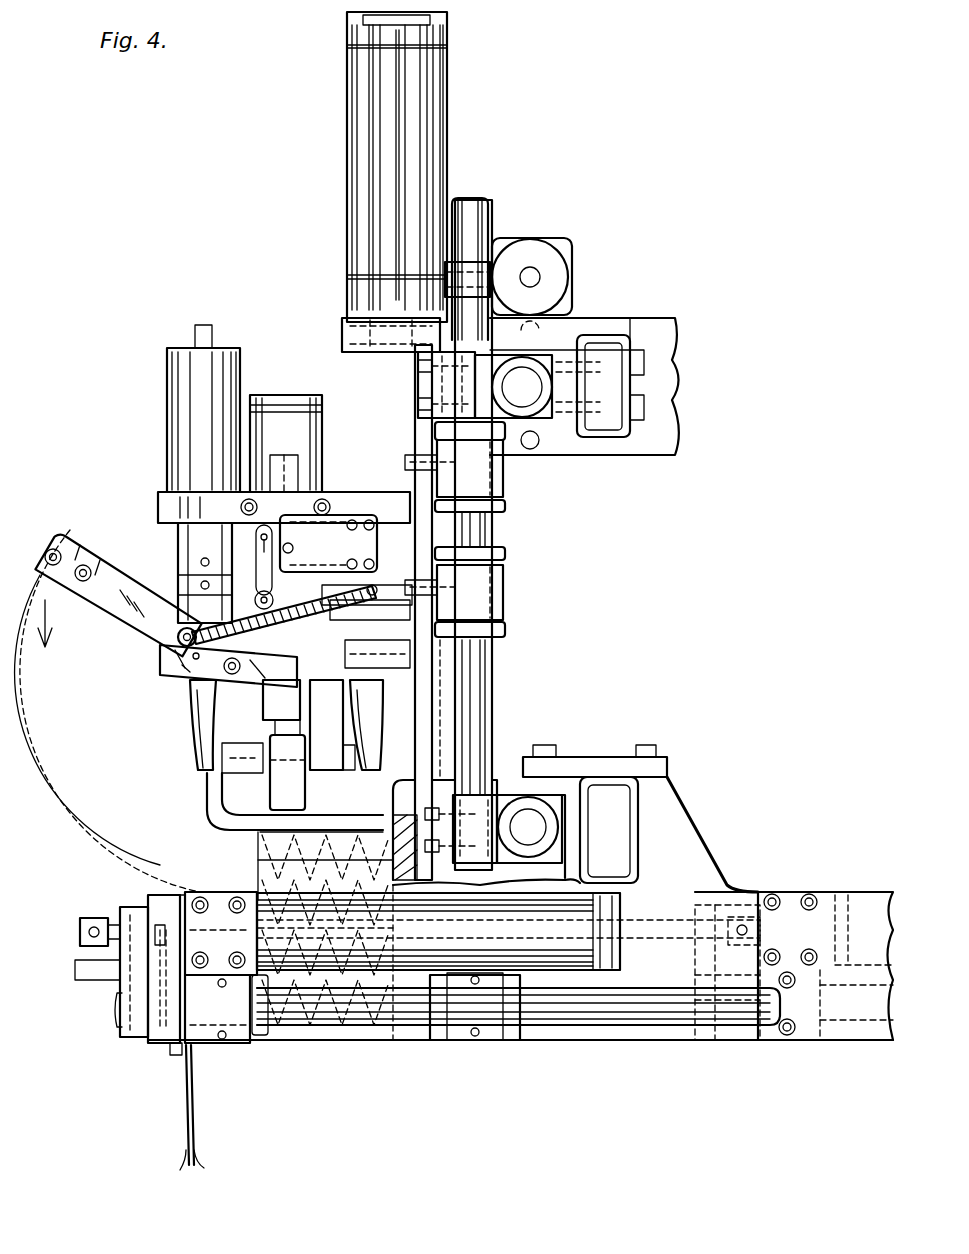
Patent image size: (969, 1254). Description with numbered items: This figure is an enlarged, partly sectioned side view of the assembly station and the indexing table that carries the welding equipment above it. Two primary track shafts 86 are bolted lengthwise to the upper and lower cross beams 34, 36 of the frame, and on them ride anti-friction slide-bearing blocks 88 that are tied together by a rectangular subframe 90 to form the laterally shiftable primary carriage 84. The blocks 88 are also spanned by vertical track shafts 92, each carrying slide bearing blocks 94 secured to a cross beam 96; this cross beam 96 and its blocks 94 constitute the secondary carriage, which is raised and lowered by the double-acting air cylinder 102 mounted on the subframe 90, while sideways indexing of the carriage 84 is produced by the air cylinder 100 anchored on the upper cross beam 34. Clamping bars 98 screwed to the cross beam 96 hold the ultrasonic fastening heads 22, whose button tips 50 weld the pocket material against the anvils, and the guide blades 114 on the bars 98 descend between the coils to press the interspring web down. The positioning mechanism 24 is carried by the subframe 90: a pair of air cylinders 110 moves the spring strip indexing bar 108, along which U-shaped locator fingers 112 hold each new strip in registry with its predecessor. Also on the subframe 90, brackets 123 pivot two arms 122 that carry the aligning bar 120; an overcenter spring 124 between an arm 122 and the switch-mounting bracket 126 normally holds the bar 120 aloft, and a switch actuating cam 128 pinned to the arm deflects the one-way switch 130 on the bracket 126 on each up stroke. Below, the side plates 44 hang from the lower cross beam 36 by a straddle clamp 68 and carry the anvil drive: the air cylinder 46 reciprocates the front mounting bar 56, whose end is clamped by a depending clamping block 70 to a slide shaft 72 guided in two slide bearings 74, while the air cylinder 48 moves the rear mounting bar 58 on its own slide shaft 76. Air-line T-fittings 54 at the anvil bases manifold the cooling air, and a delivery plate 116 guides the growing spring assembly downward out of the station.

The double-acting air cylinder 102 is at (445, 87).
The double-acting air cylinder 100 is at (553, 277).
The primary track shaft 86 is at (530, 385).
The cross beam 34 is at (633, 385).
The ultrasonic fastening head 22 is at (183, 373).
The double-acting air cylinder 110 is at (277, 395).
The clamping bar 98 is at (190, 508).
The one-way switch 130 is at (333, 562).
The aligning bar 120 is at (78, 560).
The overcenter spring 124 is at (185, 630).
The arm 122 is at (128, 620).
The switch actuating cam 128 is at (290, 636).
The switch-mounting bracket 126 is at (380, 597).
The bracket 123 is at (377, 654).
The anti-friction slide-bearing block 88 is at (478, 407).
The slide bearing block 94 is at (497, 483).
The cross beam 96 is at (423, 531).
The vertical track shaft 92 is at (482, 537).
The primary carriage 84 is at (500, 650).
The rectangular subframe 90 is at (430, 708).
The guide blade 114 is at (255, 712).
The button tip 50 is at (200, 767).
The U-shaped locator finger 112 is at (205, 793).
The spring strip indexing bar 108 is at (298, 790).
The positioning mechanism 24 is at (188, 803).
The straddle clamp 68 is at (617, 760).
The cross beam 36 is at (633, 803).
The side plate 44 is at (672, 820).
The mounting bar 58 is at (713, 893).
The air cylinder 48 is at (855, 910).
The mounting bar 56 is at (125, 910).
The air-line T-fitting 54 is at (80, 928).
The slide shaft 72 is at (117, 1007).
The clamping block 70 is at (125, 1020).
The air cylinder 46 is at (600, 960).
The slide bearing 74 is at (241, 1040).
The slide shaft 76 is at (845, 1040).
The delivery plate 116 is at (192, 1135).